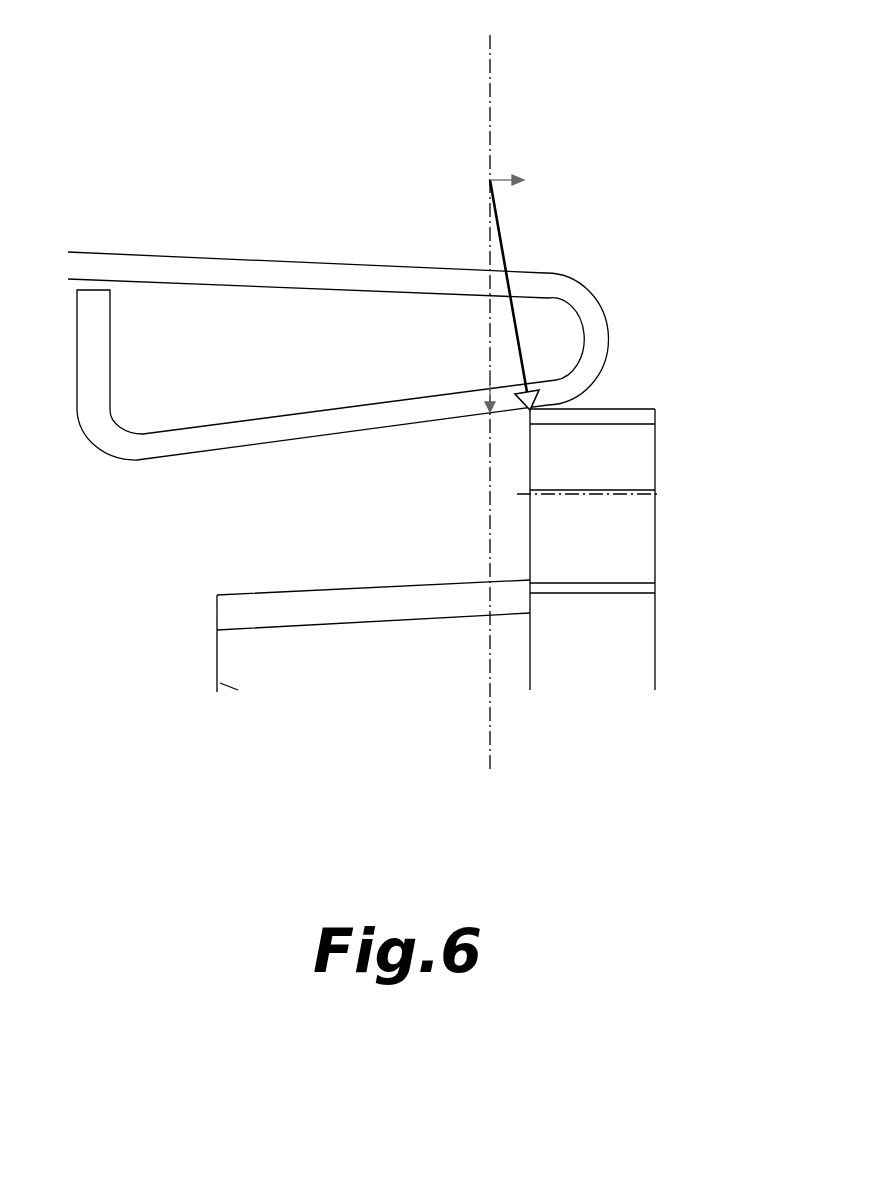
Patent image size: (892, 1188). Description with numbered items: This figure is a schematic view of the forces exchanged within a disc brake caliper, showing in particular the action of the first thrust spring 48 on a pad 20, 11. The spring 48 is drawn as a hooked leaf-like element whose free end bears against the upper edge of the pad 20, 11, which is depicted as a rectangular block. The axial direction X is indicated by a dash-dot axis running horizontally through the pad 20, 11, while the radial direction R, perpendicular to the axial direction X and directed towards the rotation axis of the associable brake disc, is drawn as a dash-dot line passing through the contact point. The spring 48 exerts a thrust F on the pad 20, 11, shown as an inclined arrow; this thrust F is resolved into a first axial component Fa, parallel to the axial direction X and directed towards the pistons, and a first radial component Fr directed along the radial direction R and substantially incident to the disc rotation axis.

The first thrust spring 48 is at (170, 247).
The pad 20 is at (655, 500).
The housing 11 is at (656, 453).
The radial direction R is at (490, 40).
The axial direction X is at (657, 494).
The thrust F is at (508, 286).
The first axial component Fa is at (512, 177).
The first radial component Fr is at (490, 368).